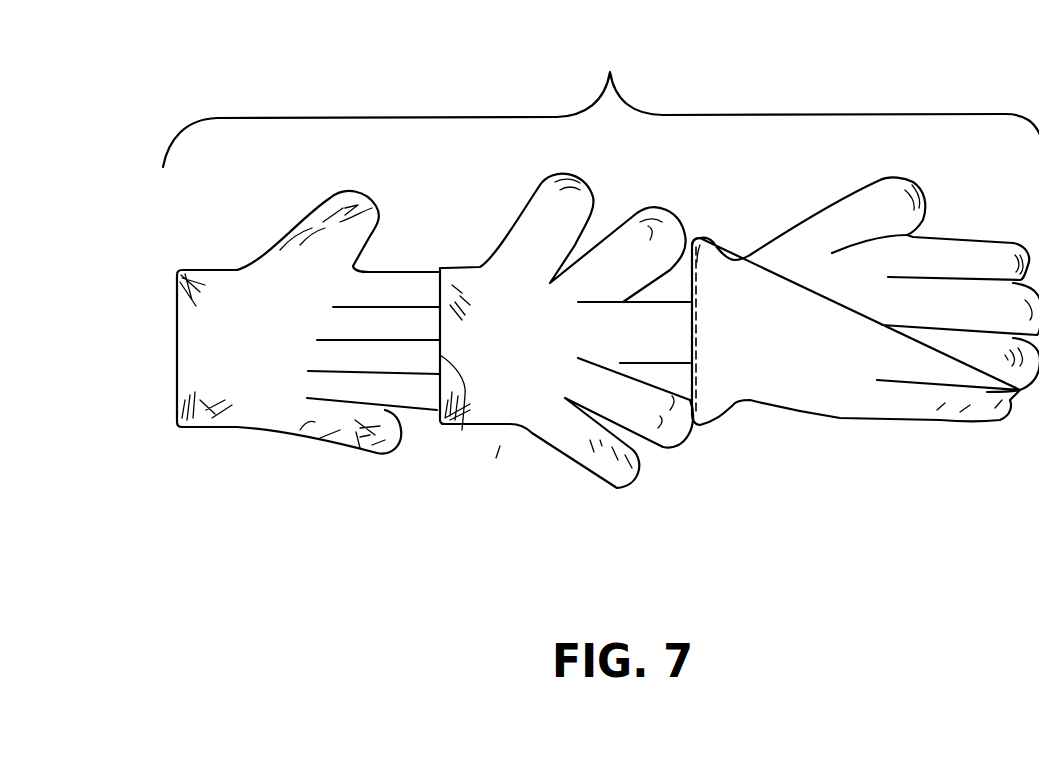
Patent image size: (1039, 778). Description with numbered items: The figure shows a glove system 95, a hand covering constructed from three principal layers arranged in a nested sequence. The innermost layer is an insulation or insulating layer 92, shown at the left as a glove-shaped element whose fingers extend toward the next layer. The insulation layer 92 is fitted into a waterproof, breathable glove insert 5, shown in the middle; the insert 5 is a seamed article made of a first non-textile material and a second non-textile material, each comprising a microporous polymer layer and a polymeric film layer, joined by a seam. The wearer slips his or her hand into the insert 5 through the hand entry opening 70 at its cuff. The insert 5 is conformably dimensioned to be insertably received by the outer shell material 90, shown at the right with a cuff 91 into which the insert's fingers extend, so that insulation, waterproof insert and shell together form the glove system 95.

The glove system 95 is at (601, 100).
The insulation layer 92 is at (238, 405).
The glove insert 5 is at (562, 354).
The hand entry opening 70 is at (462, 430).
The outer shell material 90 is at (827, 402).
The cuff of outer glove 91 is at (693, 247).